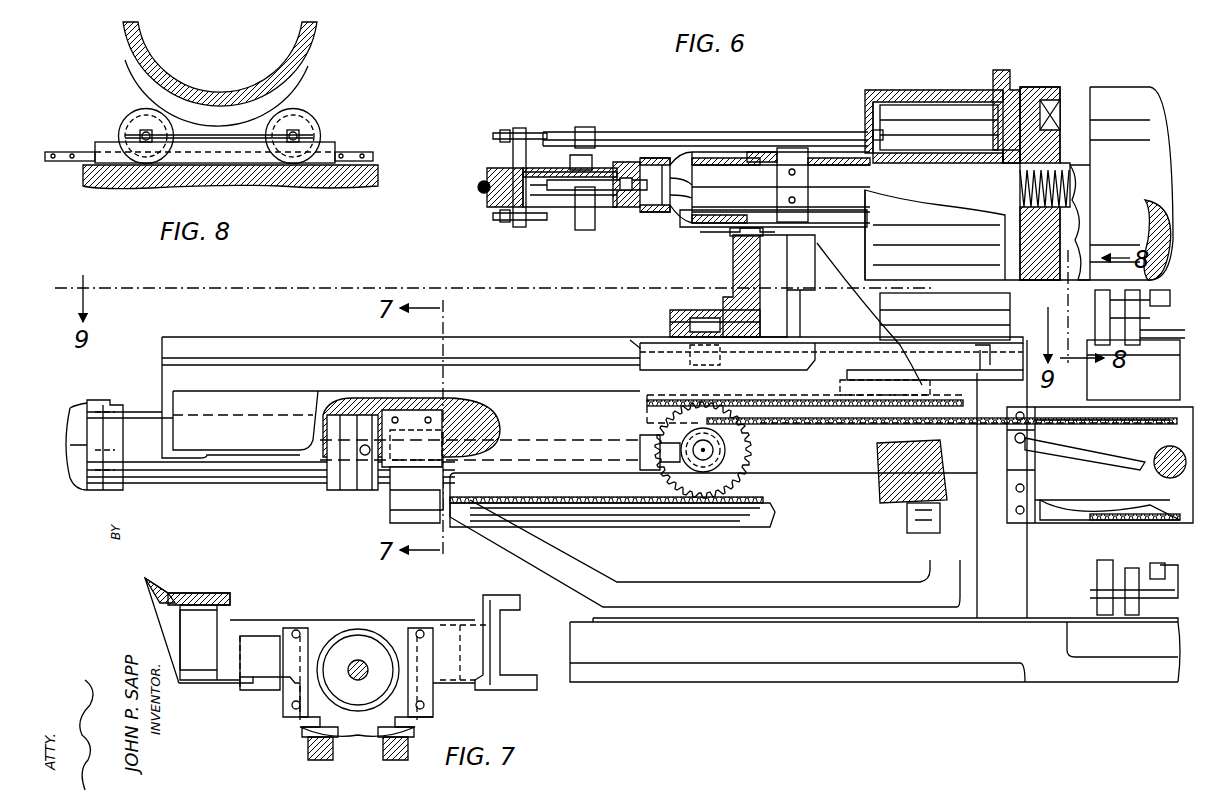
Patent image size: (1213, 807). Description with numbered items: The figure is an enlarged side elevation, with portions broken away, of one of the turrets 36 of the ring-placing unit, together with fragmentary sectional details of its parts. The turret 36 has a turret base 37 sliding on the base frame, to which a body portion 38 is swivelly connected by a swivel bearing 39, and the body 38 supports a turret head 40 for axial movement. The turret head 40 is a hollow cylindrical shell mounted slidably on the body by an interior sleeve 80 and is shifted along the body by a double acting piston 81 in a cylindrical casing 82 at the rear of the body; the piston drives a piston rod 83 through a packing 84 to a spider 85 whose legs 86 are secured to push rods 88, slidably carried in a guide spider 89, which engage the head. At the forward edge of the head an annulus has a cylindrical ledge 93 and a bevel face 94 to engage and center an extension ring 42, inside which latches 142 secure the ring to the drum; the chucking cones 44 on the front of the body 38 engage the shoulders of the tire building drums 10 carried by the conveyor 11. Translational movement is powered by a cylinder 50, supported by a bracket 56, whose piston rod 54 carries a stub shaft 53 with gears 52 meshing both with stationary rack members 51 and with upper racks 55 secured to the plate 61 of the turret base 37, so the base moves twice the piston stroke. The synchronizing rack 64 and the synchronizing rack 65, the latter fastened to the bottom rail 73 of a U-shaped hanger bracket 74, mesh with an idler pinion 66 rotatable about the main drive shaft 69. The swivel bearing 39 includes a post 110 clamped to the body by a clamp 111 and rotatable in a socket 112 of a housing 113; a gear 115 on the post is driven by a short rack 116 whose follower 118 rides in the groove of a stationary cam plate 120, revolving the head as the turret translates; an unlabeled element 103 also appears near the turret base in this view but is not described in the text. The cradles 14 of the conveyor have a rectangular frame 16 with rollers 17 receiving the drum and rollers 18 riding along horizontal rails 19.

In FIG. 8, the collapsible tire building drums 10 is at (314, 72).
In FIG. 6, the collapsible tire building drums 10 is at (1150, 82).
In FIG. 8, the conveyor 11 is at (373, 156).
In FIG. 6, the conveyor 11 is at (1185, 335).
In FIG. 8, the cradles 14 is at (213, 147).
In FIG. 6, the cradles 14 is at (1135, 464).
In FIG. 8, the rectangular frame 16 is at (142, 82).
In FIG. 8, the rollers 17 is at (133, 162).
In FIG. 6, the rollers 17 is at (1095, 312).
In FIG. 8, the rollers 18 is at (120, 130).
In FIG. 6, the rollers 18 is at (1145, 298).
In FIG. 8, the horizontal rails 19 is at (96, 146).
In FIG. 6, the horizontal rails 19 is at (1110, 340).
In FIG. 6, the turrets 36 is at (676, 248).
In FIG. 6, the turret base 37 is at (900, 350).
In FIG. 6, the body portion 38 is at (738, 152).
In FIG. 6, the swivel bearing 39 is at (805, 245).
In FIG. 6, the turret head 40 is at (912, 90).
In FIG. 6, the extension ring 42 is at (1050, 88).
In FIG. 6, the chucking cones 44 is at (1090, 134).
In FIG. 6, the cylinder 50 is at (262, 476).
In FIG. 7, the cylinder 50 is at (370, 645).
In FIG. 6, the stationary rack members 51 is at (662, 518).
In FIG. 7, the stationary rack members 51 is at (307, 748).
In FIG. 6, the gears 52 is at (755, 445).
In FIG. 6, the stub shaft 53 is at (650, 432).
In FIG. 6, the piston rod 54 is at (500, 432).
In FIG. 7, the piston rod 54 is at (295, 705).
In FIG. 6, the racks 55 is at (650, 410).
In FIG. 6, the bracket 56 is at (372, 484).
In FIG. 7, the bracket 56 is at (445, 620).
In FIG. 6, the plate 61 is at (920, 380).
In FIG. 6, the synchronizing rack 64 is at (995, 432).
In FIG. 6, the synchronizing rack 65 is at (1140, 505).
In FIG. 6, the idler pinion 66 is at (1140, 462).
In FIG. 6, the main drive shaft 69 is at (1155, 470).
In FIG. 6, the bottom rail 73 is at (920, 533).
In FIG. 6, the bracket 74 is at (900, 490).
In FIG. 6, the interior sleeve 80 is at (903, 150).
In FIG. 6, the double acting piston 81 is at (636, 158).
In FIG. 6, the cylindrical casing 82 is at (650, 156).
In FIG. 6, the piston rod 83 is at (624, 130).
In FIG. 6, the packing 84 is at (545, 128).
In FIG. 6, the spider 85 is at (510, 152).
In FIG. 6, the legs 86 is at (505, 197).
In FIG. 6, the push rods 88 is at (568, 114).
In FIG. 6, the guide spider 89 is at (590, 228).
In FIG. 6, the cylindrical ledge 93 is at (1030, 88).
In FIG. 6, the bevel face 94 is at (1043, 88).
In FIG. 6, the support 103 is at (1010, 300).
In FIG. 6, the post 110 is at (735, 280).
In FIG. 6, the clamp 111 is at (815, 148).
In FIG. 6, the socket 112 is at (728, 232).
In FIG. 6, the housing 113 is at (850, 370).
In FIG. 6, the gear 115 is at (672, 311).
In FIG. 6, the rack 116 is at (680, 332).
In FIG. 6, the follower 118 is at (690, 355).
In FIG. 6, the cam plate 120 is at (596, 348).
In FIG. 6, the latches 142 is at (1062, 96).